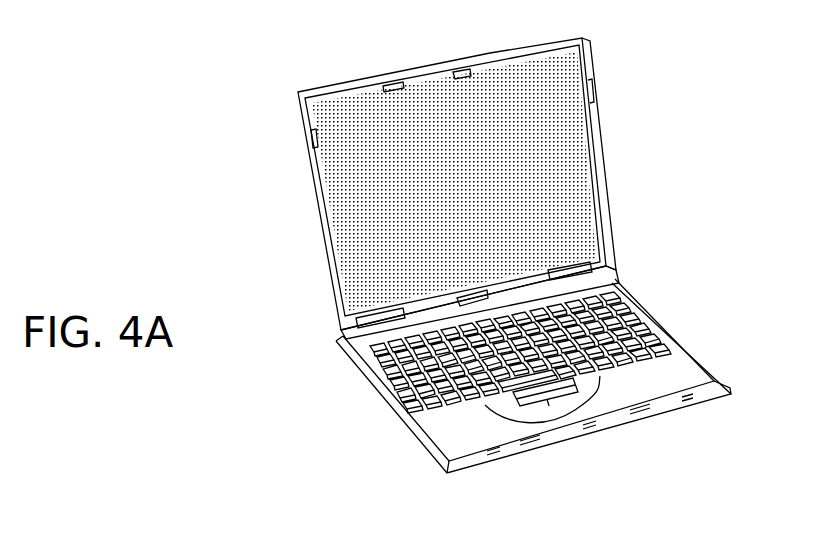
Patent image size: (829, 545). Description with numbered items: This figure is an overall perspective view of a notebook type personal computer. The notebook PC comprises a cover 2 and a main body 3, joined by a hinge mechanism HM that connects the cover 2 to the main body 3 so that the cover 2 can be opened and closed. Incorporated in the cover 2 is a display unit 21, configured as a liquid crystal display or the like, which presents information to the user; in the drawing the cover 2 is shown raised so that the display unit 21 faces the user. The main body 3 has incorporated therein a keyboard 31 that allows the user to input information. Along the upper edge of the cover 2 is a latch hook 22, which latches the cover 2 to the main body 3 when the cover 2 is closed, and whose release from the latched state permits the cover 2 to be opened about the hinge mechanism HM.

The cover 2 is at (597, 149).
The display unit 21 is at (368, 236).
The latch hook 22 is at (462, 73).
The main body 3 is at (383, 405).
The keyboard 31 is at (638, 300).
The hinge mechanism HM is at (372, 322).